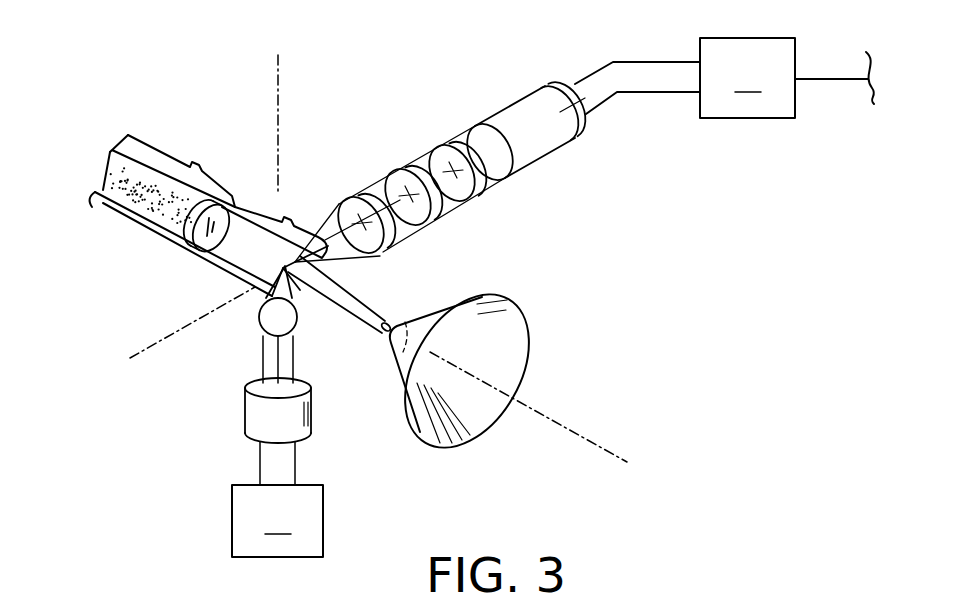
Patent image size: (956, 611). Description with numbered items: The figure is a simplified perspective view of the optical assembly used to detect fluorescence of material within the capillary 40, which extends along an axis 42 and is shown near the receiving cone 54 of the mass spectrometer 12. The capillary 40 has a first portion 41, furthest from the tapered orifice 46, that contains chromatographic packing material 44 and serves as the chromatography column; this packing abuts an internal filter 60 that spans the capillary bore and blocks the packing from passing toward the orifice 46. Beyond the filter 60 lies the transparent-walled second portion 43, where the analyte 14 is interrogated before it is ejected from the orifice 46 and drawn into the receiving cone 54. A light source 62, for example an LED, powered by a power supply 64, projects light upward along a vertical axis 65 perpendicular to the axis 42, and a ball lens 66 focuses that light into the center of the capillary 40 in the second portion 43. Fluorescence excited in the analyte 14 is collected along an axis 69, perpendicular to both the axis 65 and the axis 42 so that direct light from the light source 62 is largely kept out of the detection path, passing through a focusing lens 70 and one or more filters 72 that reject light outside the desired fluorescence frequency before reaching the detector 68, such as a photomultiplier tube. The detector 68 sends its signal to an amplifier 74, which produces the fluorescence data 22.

The mass spectrometer 12 is at (647, 362).
The analyte 14 is at (243, 266).
The fluorescence data 22 is at (833, 77).
The capillary 40 is at (112, 217).
The first portion 41 is at (196, 166).
The axis 42 is at (564, 423).
The second portion 43 is at (283, 222).
The chromatographic packing material 44 is at (150, 221).
The orifice 46 is at (396, 306).
The receiving cone 54 is at (468, 426).
The internal filter 60 is at (201, 256).
The light source 62 is at (257, 415).
The power supply 64 is at (277, 521).
The axis 65 is at (284, 124).
The ball lens 66 is at (262, 322).
The detector 68 is at (521, 108).
The axis 69 is at (156, 343).
The focusing lens 70 is at (341, 199).
The filters 72 is at (392, 170).
The amplifier 74 is at (685, 78).